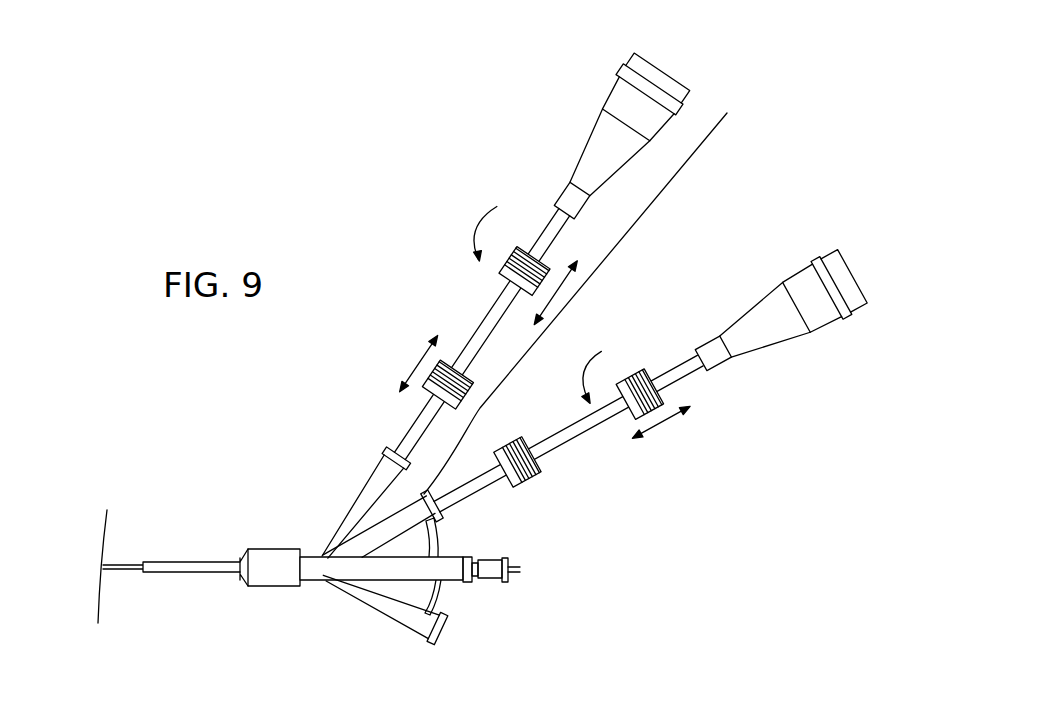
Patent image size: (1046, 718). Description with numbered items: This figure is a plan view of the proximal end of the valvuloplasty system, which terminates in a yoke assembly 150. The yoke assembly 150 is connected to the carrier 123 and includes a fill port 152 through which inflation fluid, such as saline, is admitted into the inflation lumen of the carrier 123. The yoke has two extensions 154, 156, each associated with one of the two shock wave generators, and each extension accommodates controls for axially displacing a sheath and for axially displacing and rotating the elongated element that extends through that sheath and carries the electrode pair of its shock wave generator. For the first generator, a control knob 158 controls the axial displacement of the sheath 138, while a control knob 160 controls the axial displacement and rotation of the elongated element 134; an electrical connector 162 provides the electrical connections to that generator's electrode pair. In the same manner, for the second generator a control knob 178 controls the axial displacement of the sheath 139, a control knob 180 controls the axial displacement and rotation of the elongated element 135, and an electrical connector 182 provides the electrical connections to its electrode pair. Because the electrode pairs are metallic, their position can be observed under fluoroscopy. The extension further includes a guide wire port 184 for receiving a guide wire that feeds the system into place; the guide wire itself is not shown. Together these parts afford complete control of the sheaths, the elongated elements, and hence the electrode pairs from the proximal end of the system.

The carrier 123 is at (186, 560).
The elongated element 134 is at (487, 322).
The elongated element 135 is at (570, 427).
The sheath 138 is at (406, 433).
The sheath 139 is at (497, 487).
The yoke assembly 150 is at (297, 484).
The fill port 152 is at (365, 602).
The extension 154 is at (375, 462).
The extension 156 is at (440, 527).
The control knob 158 is at (473, 370).
The control knob 160 is at (516, 245).
The electrical connector 162 is at (588, 130).
The control knob 178 is at (543, 463).
The control knob 180 is at (667, 395).
The electrical connector 182 is at (767, 295).
The guide wire port 184 is at (492, 580).